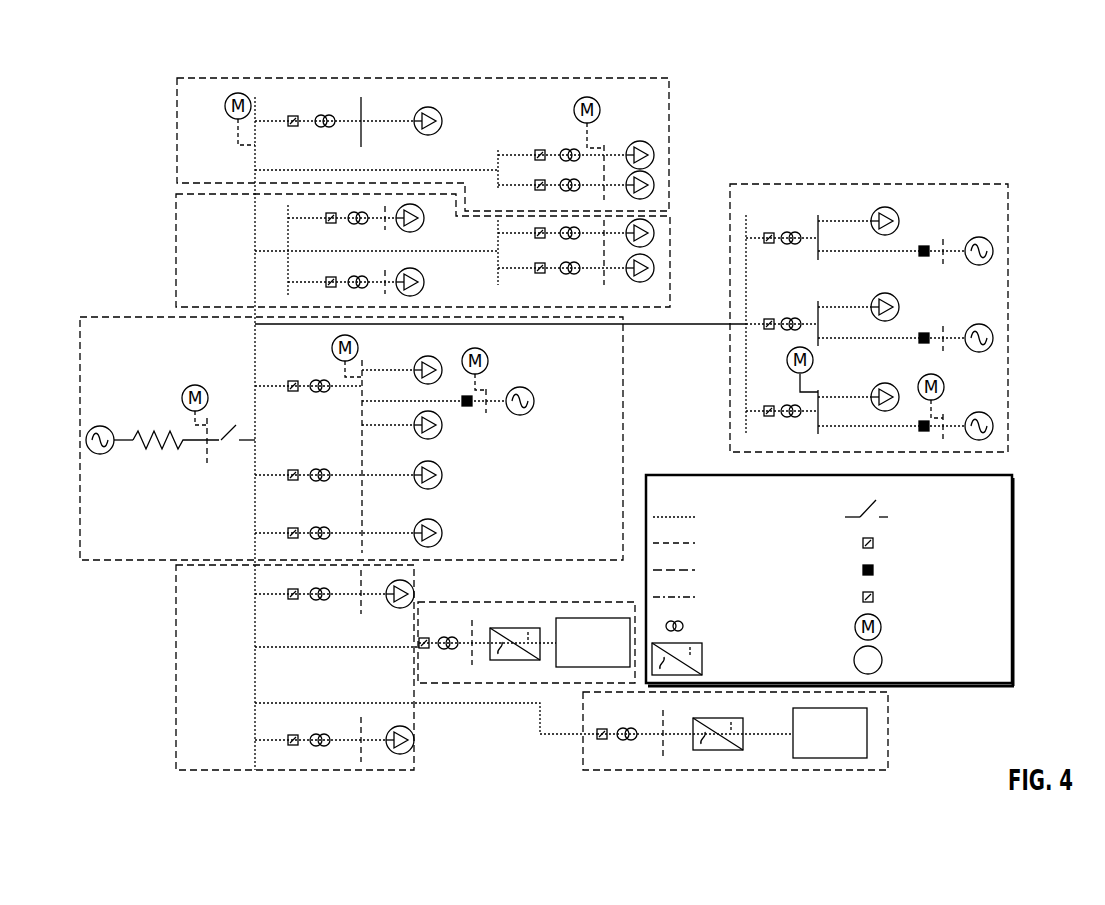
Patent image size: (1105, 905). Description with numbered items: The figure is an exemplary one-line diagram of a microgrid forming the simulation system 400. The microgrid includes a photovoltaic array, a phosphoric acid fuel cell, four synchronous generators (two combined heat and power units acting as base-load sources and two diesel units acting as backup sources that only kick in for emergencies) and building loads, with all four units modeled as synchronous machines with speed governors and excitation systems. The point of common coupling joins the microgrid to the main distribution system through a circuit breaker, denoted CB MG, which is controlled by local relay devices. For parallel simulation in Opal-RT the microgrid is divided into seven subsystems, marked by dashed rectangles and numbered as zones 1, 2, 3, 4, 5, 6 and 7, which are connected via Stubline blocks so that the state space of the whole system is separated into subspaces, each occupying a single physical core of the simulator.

The simulation system 400 is at (934, 99).
The zone 1 main distribution system 1 is at (351, 438).
The zone 2 is at (869, 318).
The zone 3 is at (386, 667).
The zone 4 is at (423, 250).
The zone 5 is at (423, 144).
The zone 6 fuel cell 6 is at (526, 642).
The zone 7 PV panel 7 is at (735, 731).